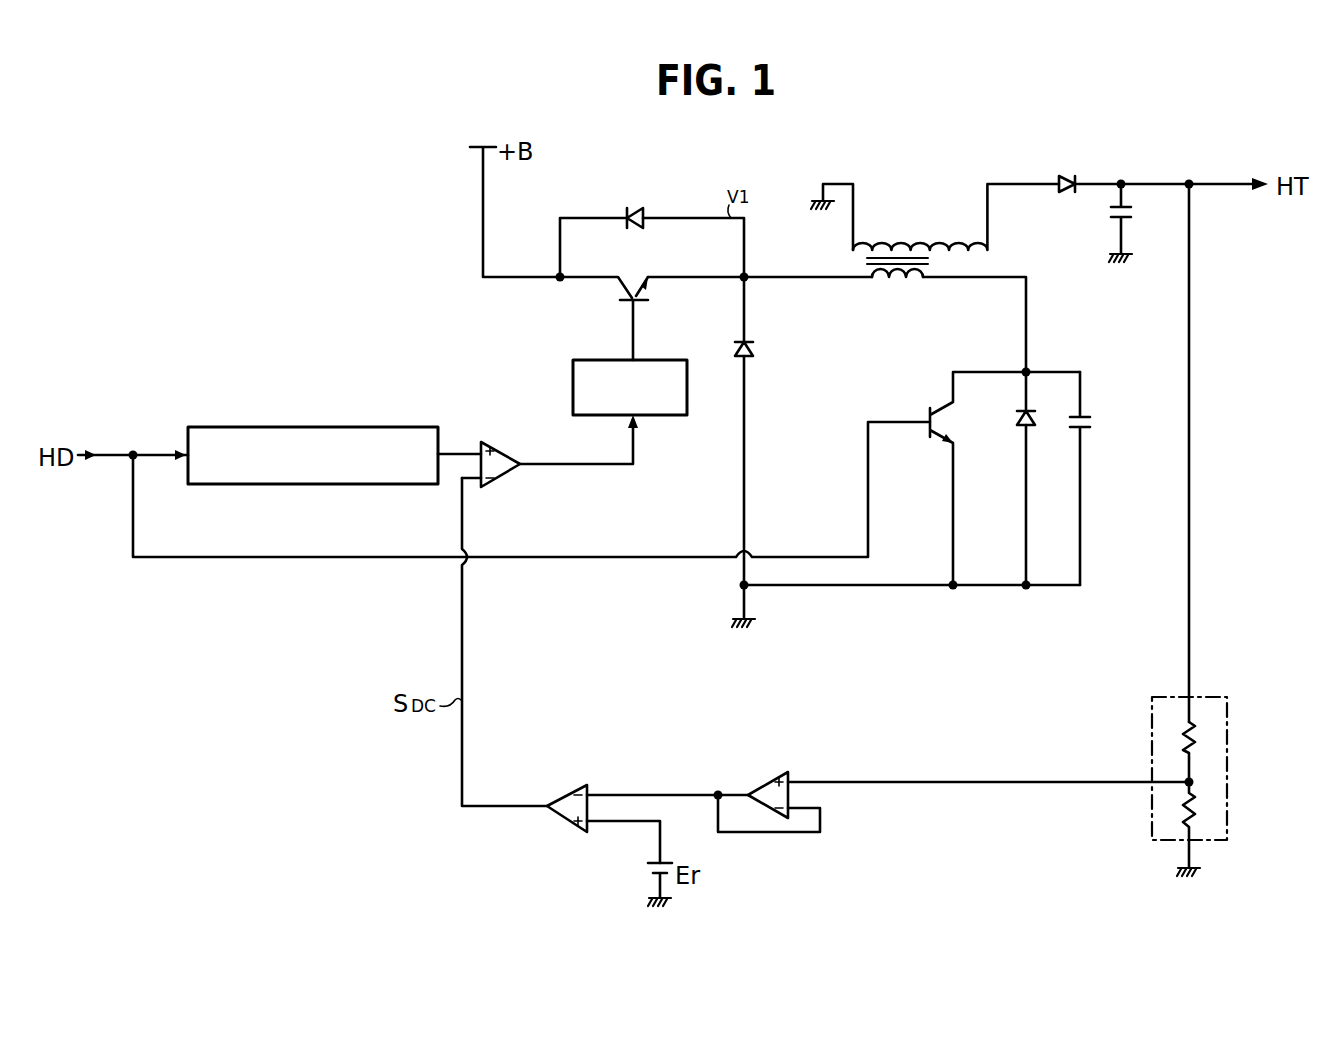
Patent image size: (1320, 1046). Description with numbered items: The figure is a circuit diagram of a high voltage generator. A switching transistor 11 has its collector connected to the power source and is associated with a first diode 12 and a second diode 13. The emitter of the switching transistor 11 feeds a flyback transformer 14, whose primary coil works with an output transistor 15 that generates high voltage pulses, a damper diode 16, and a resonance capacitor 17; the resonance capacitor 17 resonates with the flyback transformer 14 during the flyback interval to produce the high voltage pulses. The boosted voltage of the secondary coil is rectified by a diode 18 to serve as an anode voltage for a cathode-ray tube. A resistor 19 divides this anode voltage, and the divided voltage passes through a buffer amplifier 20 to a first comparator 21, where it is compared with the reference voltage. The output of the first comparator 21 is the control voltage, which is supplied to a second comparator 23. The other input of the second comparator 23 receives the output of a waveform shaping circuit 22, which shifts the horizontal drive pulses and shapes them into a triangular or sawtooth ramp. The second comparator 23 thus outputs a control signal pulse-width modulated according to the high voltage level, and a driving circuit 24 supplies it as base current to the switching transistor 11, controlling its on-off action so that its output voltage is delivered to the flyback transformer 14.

The switching transistor 11 is at (623, 292).
The first diode 12 is at (636, 217).
The second diode 13 is at (755, 348).
The flyback transformer 14 is at (858, 263).
The output transistor 15 is at (1005, 478).
The damper diode 16 is at (1042, 478).
The resonance capacitor 17 is at (1096, 478).
The diode 18 is at (1068, 180).
The resistor 19 is at (1228, 726).
The buffer amplifier 20 is at (776, 772).
The first comparator 21 is at (567, 790).
The waveform shaping circuit 22 is at (343, 427).
The second comparator 23 is at (508, 473).
The driving circuit 24 is at (573, 392).